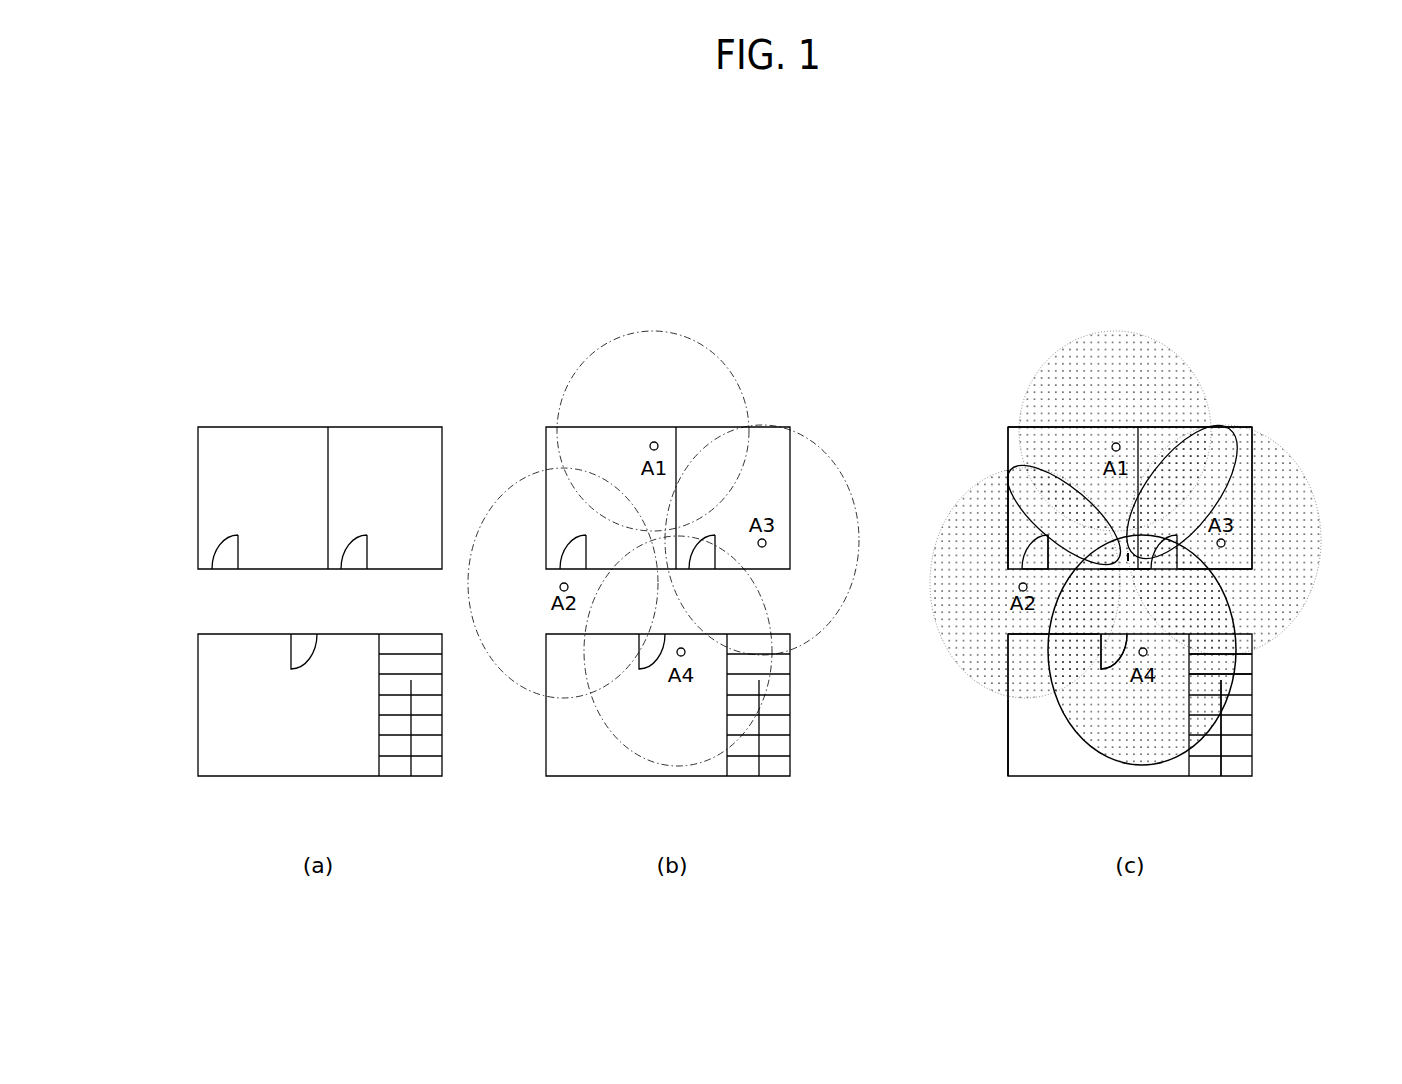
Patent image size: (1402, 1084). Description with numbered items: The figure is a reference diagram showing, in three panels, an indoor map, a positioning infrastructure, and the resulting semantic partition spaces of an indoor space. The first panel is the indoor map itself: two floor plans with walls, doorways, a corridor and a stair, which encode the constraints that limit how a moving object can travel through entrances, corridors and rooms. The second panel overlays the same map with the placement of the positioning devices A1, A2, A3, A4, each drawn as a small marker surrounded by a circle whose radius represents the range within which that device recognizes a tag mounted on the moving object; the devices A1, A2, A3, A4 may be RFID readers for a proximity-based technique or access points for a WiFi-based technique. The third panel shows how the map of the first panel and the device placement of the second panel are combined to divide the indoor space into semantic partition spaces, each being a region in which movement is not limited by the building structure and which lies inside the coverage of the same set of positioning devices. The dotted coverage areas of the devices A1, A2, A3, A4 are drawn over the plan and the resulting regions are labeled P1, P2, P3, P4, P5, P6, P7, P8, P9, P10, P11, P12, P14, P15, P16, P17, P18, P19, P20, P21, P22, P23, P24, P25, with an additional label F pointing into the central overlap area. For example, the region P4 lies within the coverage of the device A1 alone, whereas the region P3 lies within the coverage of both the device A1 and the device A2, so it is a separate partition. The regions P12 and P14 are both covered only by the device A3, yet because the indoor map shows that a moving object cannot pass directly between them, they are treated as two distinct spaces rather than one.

The semantic partition space region P1 is at (1012, 440).
The semantic partition space region P2 is at (1018, 508).
The semantic partition space region P3 is at (1058, 500).
The semantic partition space region P4 is at (1084, 440).
The semantic partition space region P5 is at (1129, 560).
The semantic partition space region P6 is at (1129, 560).
The semantic partition space region P7 is at (1129, 560).
The semantic partition space region P8 is at (1125, 578).
The semantic partition space region P9 is at (1135, 585).
The semantic partition space region P10 is at (1157, 438).
The semantic partition space region P11 is at (1185, 450).
The semantic partition space region P12 is at (1242, 520).
The semantic partition space region P14 is at (1238, 586).
The semantic partition space region P15 is at (1190, 650).
The semantic partition space region P16 is at (1225, 666).
The semantic partition space region P17 is at (1233, 745).
The semantic partition space region P18 is at (1181, 640).
The semantic partition space region P19 is at (1090, 725).
The semantic partition space region P20 is at (1022, 750).
The semantic partition space region P21 is at (1018, 677).
The semantic partition space region P22 is at (1057, 646).
The semantic partition space region P23 is at (1125, 598).
The semantic partition space region P24 is at (1090, 563).
The semantic partition space region P25 is at (1090, 545).
The field / area F is at (1129, 560).
The positioning device A1 is at (1116, 447).
The positioning device A2 is at (1023, 587).
The positioning device A3 is at (1221, 543).
The positioning device A4 is at (1143, 652).